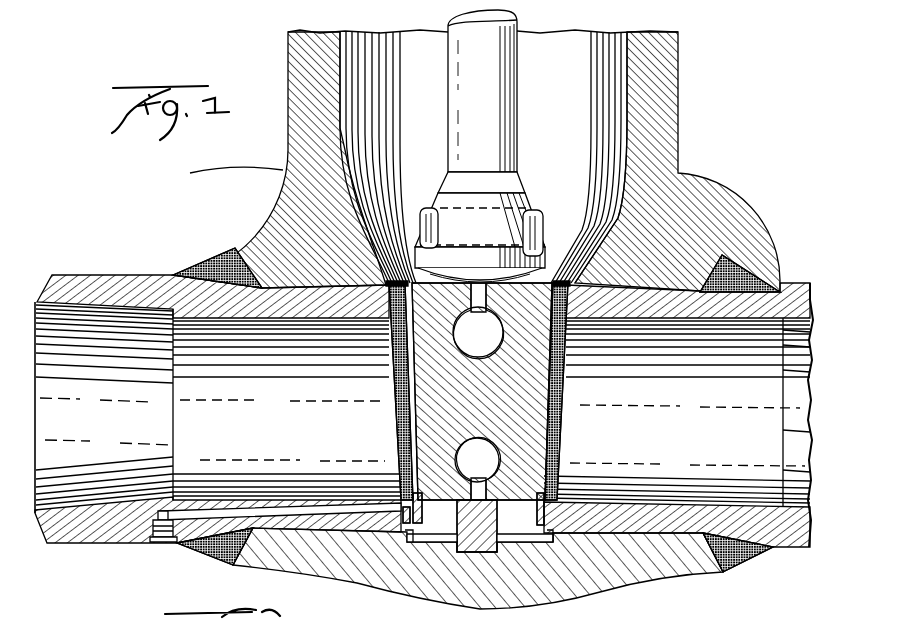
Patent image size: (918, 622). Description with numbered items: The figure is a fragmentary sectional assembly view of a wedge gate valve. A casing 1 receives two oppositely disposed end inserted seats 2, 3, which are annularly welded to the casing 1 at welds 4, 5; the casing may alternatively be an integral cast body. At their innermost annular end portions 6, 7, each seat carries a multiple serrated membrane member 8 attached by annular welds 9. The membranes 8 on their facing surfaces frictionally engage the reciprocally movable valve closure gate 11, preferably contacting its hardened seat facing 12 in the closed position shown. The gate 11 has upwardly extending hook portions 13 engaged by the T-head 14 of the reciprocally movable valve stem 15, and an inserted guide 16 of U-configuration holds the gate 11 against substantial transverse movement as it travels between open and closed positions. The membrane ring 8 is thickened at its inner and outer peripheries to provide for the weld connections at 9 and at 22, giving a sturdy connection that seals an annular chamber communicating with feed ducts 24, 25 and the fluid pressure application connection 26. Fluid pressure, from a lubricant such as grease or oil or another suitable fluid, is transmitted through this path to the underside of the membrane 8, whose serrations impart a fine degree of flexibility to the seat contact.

The casing 1 is at (697, 203).
The end inserted seat 2 is at (127, 275).
The end inserted seat 3 is at (796, 283).
The annular weld 4 is at (215, 547).
The annular weld 5 is at (745, 557).
The innermost annular end portion 6 is at (402, 495).
The innermost annular end portion 7 is at (568, 493).
The multiple serrated membrane member 8 is at (388, 281).
The annular weld 9 is at (395, 318).
The valve closure gate 11 is at (483, 157).
The hardened seat facing 12 is at (388, 268).
The hook portion 13 is at (547, 222).
The T-head 14 is at (527, 213).
The valve stem 15 is at (518, 106).
The inserted guide 16 is at (460, 553).
The weld connection 22 is at (408, 540).
The feed duct 24 is at (227, 510).
The feed duct 25 is at (157, 515).
The fluid pressure application connection 26 is at (160, 542).